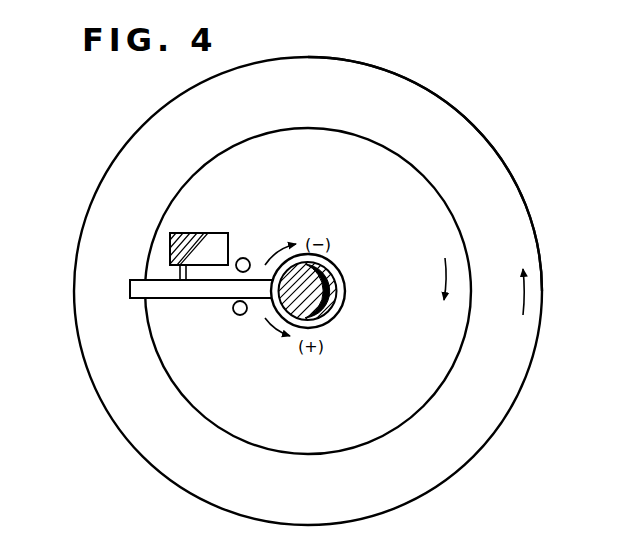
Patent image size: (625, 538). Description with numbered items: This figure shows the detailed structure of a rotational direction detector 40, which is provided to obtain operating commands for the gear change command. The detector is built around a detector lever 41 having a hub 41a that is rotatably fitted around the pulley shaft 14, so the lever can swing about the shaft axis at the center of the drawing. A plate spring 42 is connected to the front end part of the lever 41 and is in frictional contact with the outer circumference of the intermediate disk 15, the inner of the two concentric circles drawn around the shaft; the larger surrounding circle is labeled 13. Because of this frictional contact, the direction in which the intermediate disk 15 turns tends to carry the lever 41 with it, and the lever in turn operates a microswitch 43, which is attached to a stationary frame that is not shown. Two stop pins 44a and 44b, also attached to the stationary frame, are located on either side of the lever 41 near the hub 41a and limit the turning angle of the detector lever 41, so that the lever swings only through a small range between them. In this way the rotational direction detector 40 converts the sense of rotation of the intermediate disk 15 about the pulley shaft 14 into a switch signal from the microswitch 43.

The outer drum / rotating member 13 is at (427, 99).
The pulley shaft 14 is at (333, 285).
The intermediate disk 15 is at (401, 176).
The rotational direction detector 40 is at (116, 149).
The detector lever 41 is at (173, 290).
The hub 41a is at (329, 321).
The plate spring 42 is at (146, 259).
The microswitch 43 is at (215, 249).
The stop pin 44a is at (244, 258).
The stop pin 44b is at (239, 315).